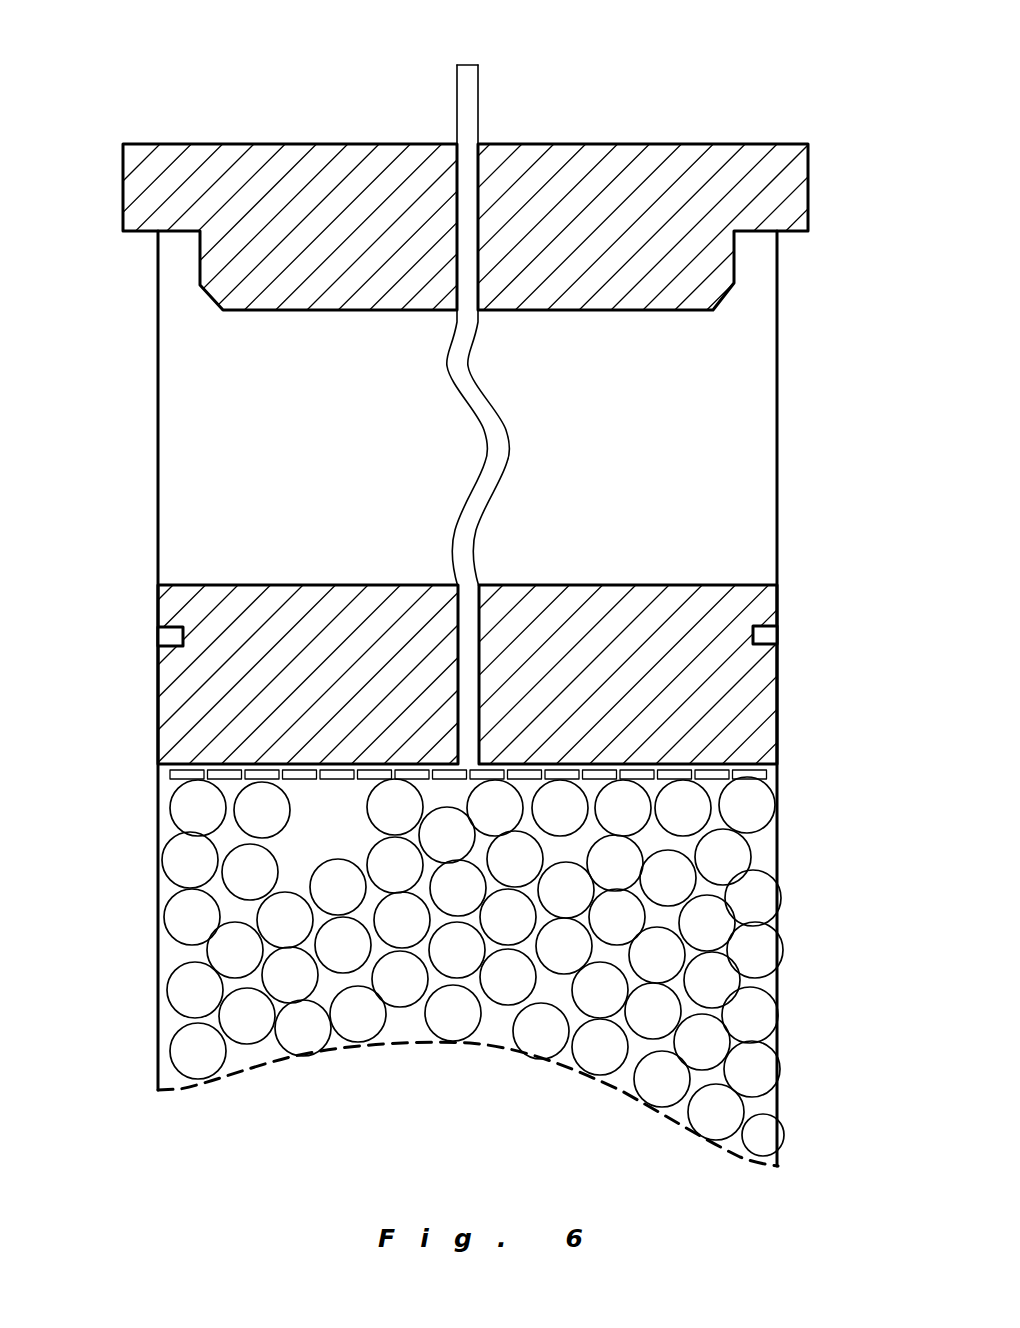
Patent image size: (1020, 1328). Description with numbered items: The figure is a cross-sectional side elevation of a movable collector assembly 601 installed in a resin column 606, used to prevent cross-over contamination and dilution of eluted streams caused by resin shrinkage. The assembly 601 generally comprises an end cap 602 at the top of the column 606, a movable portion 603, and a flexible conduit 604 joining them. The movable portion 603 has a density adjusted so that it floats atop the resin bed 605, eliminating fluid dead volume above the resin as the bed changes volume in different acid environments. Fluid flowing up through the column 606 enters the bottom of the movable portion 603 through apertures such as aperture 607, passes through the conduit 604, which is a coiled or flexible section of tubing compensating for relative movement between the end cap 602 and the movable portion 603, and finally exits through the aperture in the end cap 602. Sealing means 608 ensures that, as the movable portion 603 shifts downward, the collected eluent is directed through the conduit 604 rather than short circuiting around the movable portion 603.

The movable collector assembly 601 is at (750, 80).
The end cap 602 is at (237, 142).
The movable portion 603 is at (590, 582).
The flexible conduit 604 is at (508, 433).
The resin bed 605 is at (170, 802).
The column 606 is at (777, 369).
The aperture 607 is at (358, 781).
The sealing means 608 is at (152, 640).